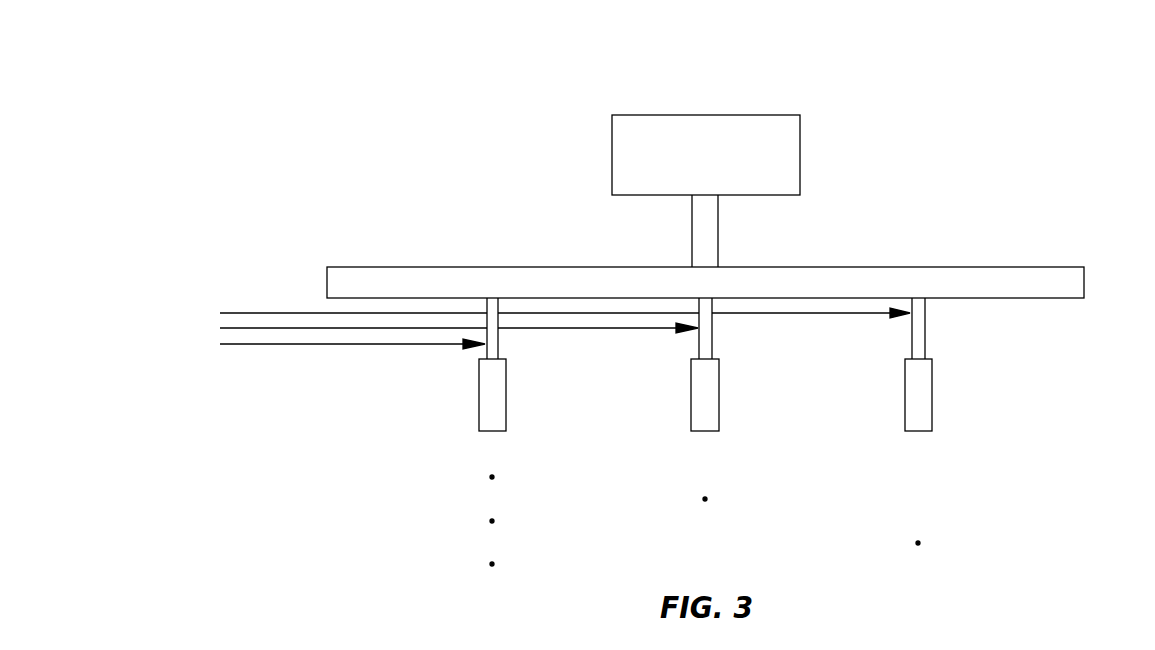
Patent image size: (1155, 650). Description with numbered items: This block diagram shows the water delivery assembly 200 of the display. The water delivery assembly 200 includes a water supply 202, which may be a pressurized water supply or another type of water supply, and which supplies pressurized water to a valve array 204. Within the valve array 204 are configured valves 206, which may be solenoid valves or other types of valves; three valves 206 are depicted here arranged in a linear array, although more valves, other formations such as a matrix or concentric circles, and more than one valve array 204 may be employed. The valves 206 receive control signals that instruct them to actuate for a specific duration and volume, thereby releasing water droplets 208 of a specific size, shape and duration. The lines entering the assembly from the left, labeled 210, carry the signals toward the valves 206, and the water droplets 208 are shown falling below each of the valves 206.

The water delivery assembly 200 is at (1003, 88).
The water supply 202 is at (705, 113).
The valve array 204 is at (976, 267).
The valves 206 is at (507, 403).
The water droplets 208 is at (490, 478).
The supply lines 210 is at (236, 344).